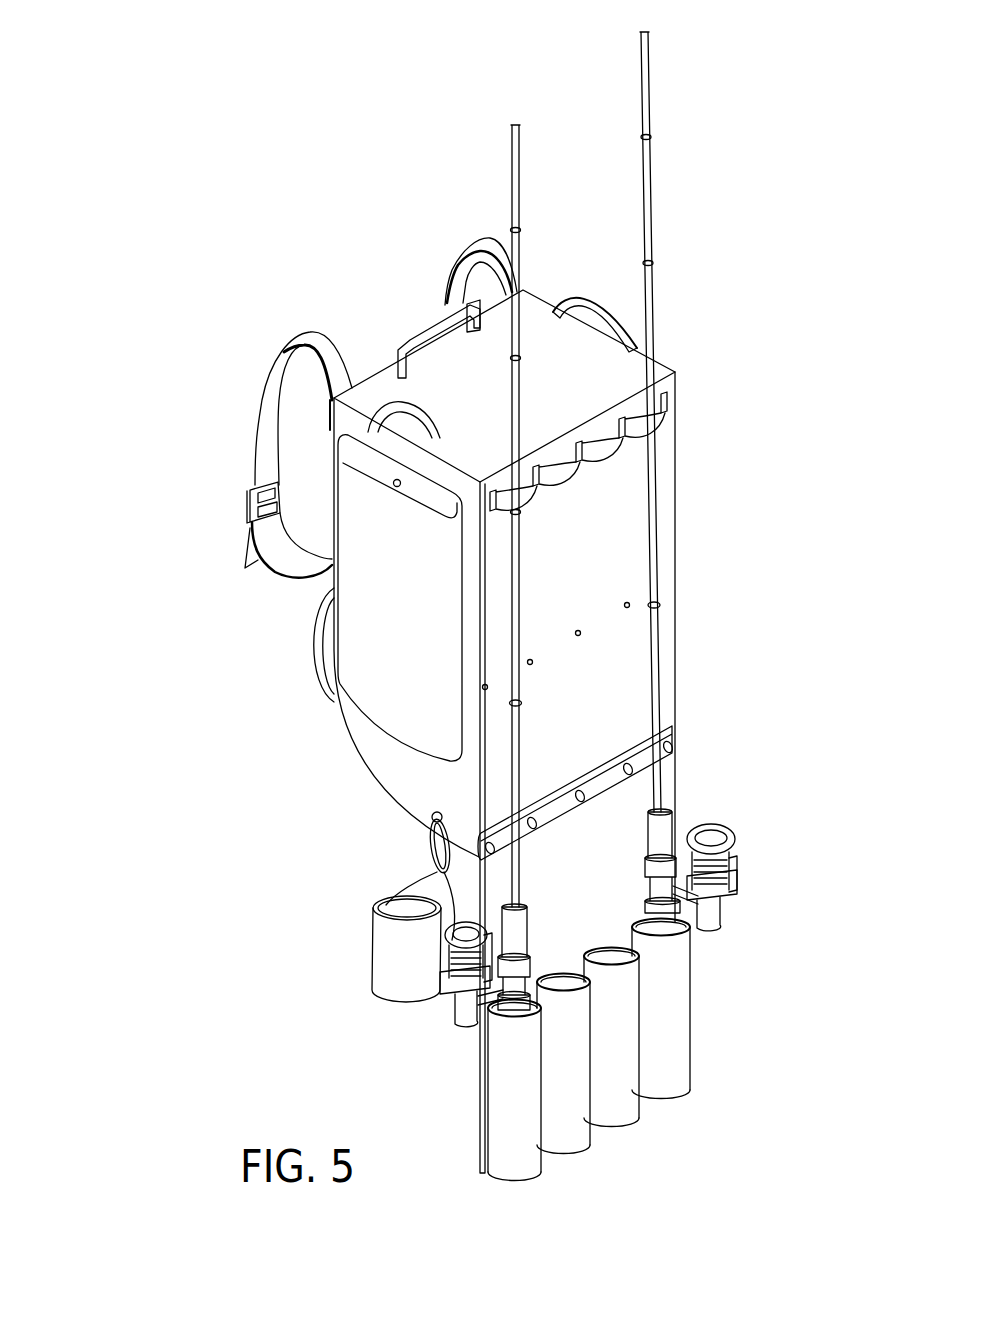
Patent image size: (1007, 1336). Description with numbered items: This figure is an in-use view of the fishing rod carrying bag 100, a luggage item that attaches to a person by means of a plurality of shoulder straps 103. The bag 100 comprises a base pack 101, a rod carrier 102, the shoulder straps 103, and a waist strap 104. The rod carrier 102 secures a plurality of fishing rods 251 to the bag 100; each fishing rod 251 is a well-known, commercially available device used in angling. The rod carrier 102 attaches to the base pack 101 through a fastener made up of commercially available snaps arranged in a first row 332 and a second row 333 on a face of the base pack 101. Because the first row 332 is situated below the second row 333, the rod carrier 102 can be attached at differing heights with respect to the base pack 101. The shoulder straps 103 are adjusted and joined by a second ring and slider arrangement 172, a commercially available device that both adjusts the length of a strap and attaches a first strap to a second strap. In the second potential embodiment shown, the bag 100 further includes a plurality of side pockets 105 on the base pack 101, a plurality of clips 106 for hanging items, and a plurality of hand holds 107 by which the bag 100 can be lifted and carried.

The fishing rod carrying bag 100 is at (140, 287).
The base pack 101 is at (360, 777).
The rod carrier 102 is at (622, 1098).
The shoulder straps 103 is at (307, 343).
The waist strap 104 is at (320, 655).
The side pockets 105 is at (382, 680).
The clips 106 is at (430, 857).
The hand holds 107 is at (590, 296).
The second ring and slider arrangement 172 is at (250, 503).
The fishing rods 251 is at (643, 82).
The first row 332 is at (695, 700).
The second row 333 is at (695, 536).